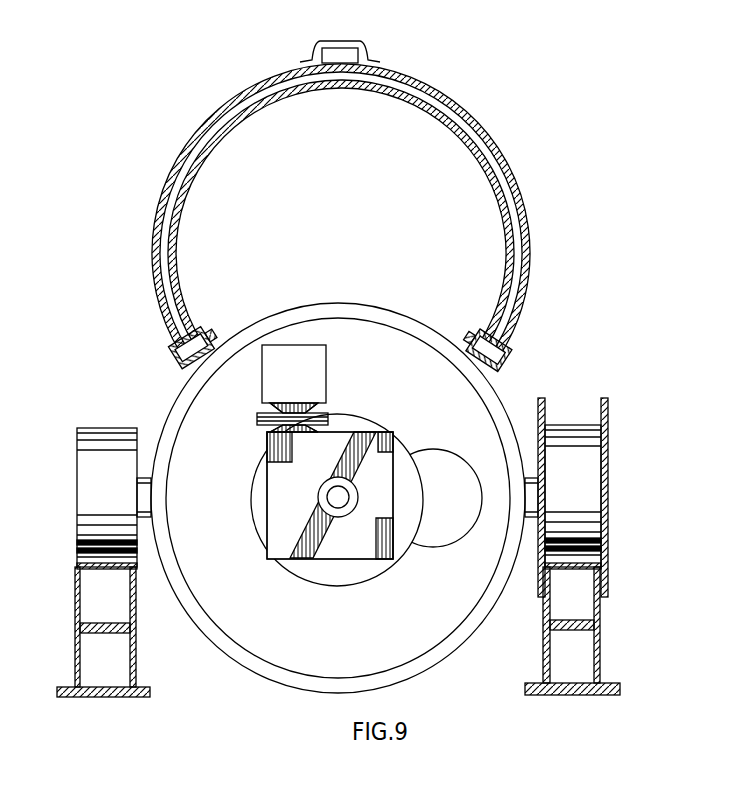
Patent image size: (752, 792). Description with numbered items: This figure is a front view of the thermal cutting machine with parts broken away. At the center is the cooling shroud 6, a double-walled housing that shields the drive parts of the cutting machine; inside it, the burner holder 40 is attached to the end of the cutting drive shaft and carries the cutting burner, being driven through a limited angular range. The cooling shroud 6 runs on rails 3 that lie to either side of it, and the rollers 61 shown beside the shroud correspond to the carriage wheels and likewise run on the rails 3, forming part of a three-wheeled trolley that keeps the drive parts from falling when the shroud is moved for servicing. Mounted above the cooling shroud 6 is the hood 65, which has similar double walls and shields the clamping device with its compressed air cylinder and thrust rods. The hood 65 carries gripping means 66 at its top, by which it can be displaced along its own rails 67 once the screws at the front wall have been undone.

The rails 3 is at (92, 592).
The cooling shroud 6 is at (296, 692).
The burner holder 40 is at (284, 542).
The rollers 61 is at (82, 476).
The hood 65 is at (486, 145).
The gripping means 66 is at (370, 52).
The rails 67 is at (505, 362).